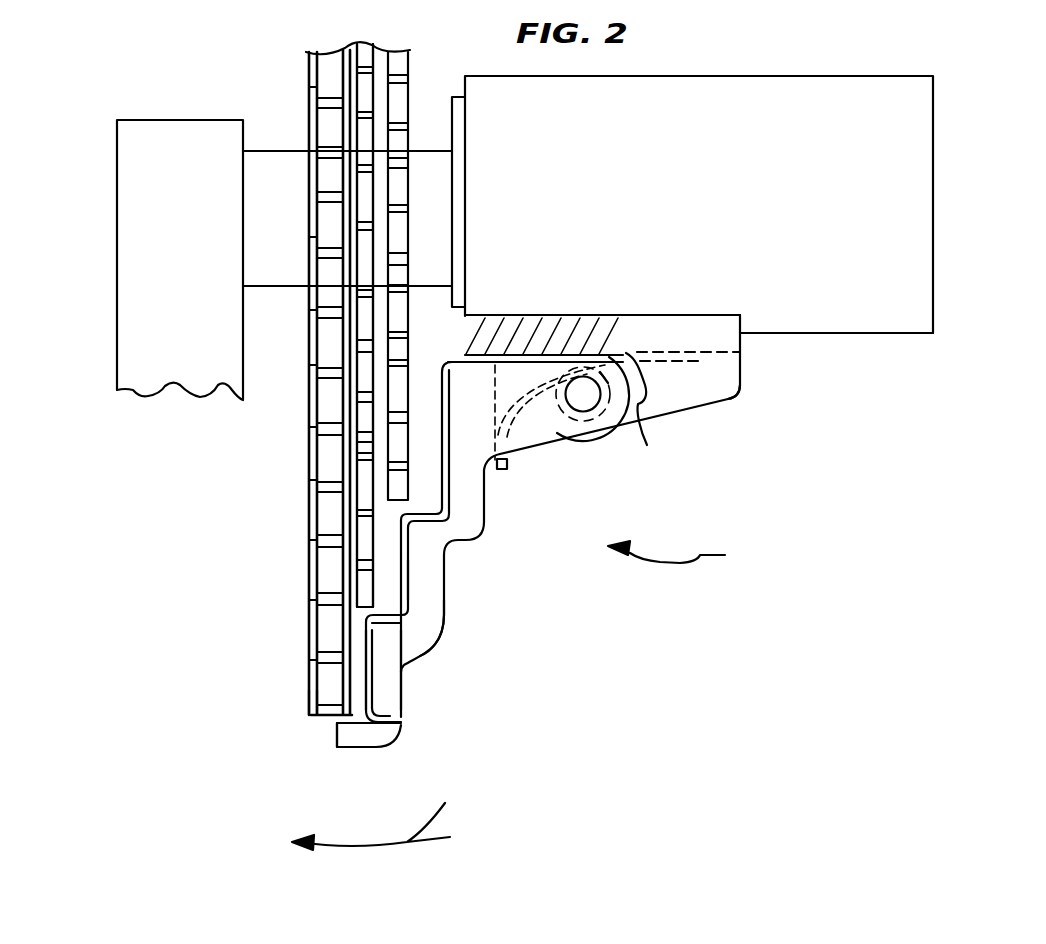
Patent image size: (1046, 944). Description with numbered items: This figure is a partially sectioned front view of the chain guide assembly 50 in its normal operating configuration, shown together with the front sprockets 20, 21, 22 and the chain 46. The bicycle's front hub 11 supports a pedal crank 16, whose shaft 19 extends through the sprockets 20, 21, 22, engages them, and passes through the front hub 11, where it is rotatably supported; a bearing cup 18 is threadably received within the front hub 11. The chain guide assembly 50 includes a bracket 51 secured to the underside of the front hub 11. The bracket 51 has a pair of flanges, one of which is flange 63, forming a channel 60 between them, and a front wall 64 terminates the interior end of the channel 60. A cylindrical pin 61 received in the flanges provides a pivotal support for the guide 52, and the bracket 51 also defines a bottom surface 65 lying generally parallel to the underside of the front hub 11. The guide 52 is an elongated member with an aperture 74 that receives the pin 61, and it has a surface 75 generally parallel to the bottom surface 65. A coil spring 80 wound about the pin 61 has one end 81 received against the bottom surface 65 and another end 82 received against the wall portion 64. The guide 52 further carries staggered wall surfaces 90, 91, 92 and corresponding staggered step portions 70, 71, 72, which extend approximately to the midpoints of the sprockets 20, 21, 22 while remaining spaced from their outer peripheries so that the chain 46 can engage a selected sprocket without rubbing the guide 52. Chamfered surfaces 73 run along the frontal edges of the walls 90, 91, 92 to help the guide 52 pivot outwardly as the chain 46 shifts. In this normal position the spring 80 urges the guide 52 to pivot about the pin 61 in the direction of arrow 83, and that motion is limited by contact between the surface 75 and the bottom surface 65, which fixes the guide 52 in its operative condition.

The front hub 11 is at (840, 323).
The pedal crank 16 is at (143, 270).
The bearing cup 18 is at (445, 172).
The shaft 19 is at (268, 160).
The front sprocket 20 is at (400, 382).
The front sprocket 21 is at (367, 432).
The front sprocket 22 is at (330, 467).
The chain 46 is at (315, 690).
The chain guide assembly 50 is at (688, 558).
The bracket 51 is at (728, 402).
The guide 52 is at (428, 587).
The channel 60 is at (647, 445).
The cylindrical pin 61 is at (590, 412).
The flange 63 is at (713, 385).
The front wall 64 is at (493, 382).
The bottom surface 65 is at (535, 362).
The step portion 70 is at (443, 540).
The step portion 71 is at (440, 623).
The step portion 72 is at (340, 722).
The chamfered surface 73 is at (402, 725).
The aperture 74 is at (573, 412).
The surface 75 is at (490, 375).
The coil spring 80 is at (600, 400).
The spring end 81 is at (700, 352).
The spring end 82 is at (502, 470).
The arrow 83 is at (386, 826).
The wall surface 90 is at (443, 410).
The wall surface 91 is at (412, 526).
The wall surface 92 is at (360, 682).